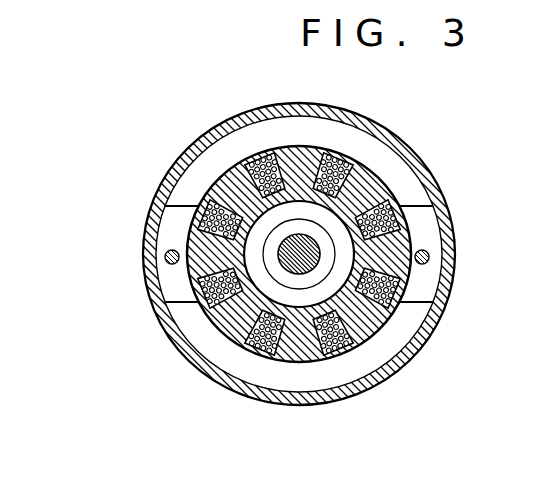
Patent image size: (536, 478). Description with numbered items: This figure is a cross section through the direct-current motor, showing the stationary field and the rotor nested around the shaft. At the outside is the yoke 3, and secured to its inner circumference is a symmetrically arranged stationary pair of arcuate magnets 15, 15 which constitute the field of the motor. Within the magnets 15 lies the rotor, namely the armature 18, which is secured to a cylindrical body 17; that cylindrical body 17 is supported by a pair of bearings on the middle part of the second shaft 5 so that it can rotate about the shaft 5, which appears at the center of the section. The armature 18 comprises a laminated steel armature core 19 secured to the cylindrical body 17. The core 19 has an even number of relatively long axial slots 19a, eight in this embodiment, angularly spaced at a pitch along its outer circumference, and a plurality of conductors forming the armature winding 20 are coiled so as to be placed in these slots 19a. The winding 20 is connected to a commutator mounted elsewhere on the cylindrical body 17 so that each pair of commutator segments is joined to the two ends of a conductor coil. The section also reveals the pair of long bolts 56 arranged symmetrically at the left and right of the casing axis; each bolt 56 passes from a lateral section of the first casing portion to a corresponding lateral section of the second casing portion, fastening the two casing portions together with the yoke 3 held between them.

The yoke 3 is at (153, 217).
The second shaft 5 is at (205, 152).
The arcuate magnets 15 is at (224, 150).
The cylindrical body 17 is at (405, 182).
The armature 18 is at (412, 232).
The armature core 19 is at (360, 160).
The axial slots 19a is at (335, 158).
The armature winding 20 is at (263, 160).
The long bolts 56 is at (165, 257).